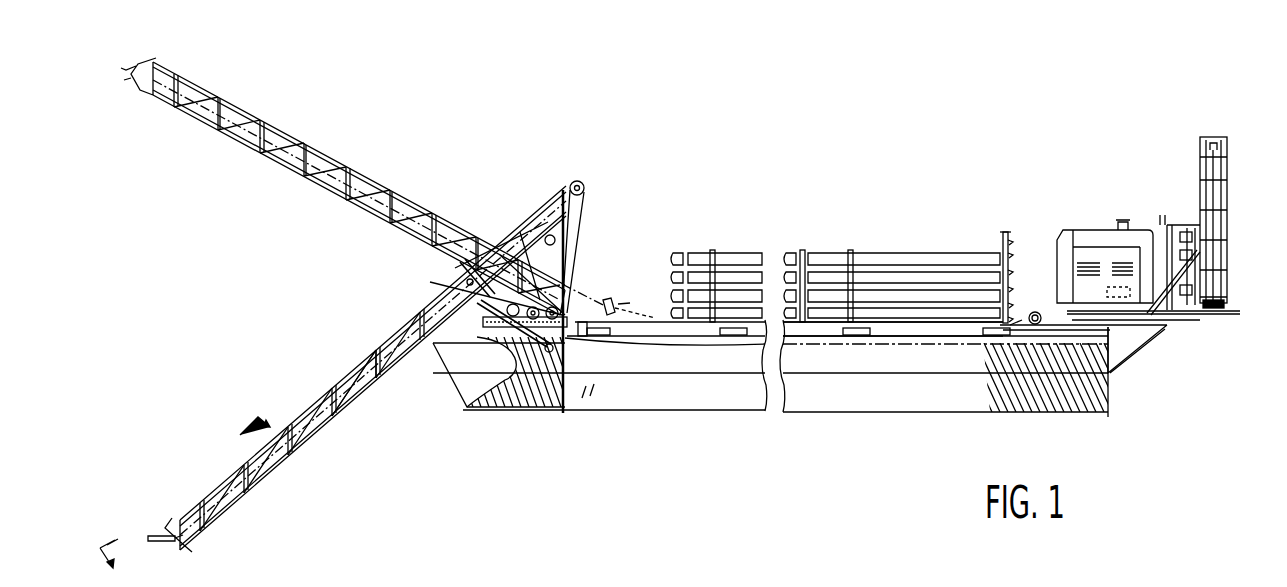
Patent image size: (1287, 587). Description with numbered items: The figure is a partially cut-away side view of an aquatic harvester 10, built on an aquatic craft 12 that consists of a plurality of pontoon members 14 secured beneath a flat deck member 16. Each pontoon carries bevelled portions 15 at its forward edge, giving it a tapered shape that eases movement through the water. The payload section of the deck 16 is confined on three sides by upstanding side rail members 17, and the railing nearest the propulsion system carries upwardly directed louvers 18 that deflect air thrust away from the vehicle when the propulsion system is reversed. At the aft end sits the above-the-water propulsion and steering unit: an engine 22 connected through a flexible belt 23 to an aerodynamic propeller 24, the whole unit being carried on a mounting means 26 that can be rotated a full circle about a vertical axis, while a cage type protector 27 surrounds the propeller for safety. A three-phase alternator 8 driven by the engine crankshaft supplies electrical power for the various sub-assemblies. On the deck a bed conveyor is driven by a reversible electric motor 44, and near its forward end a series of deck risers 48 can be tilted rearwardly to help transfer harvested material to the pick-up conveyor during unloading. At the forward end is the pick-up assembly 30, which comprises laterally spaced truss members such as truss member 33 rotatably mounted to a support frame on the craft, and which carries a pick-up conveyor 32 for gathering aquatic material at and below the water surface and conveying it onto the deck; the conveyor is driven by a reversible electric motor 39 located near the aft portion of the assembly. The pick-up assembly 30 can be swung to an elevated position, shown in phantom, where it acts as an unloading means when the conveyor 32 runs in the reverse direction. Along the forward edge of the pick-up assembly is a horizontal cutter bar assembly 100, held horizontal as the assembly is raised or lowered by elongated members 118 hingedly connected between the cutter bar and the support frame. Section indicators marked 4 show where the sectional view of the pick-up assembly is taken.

The section line 4- 4 is at (174, 484).
The three-phase alternator 8 is at (1107, 292).
The aquatic harvester 10 is at (940, 217).
The aquatic craft 12 is at (1142, 378).
The pontoon members 14 is at (862, 369).
The bevelled portions 15 is at (460, 390).
The flat deck member 16 is at (918, 336).
The upstanding side rail members 17 is at (882, 252).
The upwardly directed louvers 18 is at (1012, 250).
The engine 22 is at (1090, 232).
The flexible belt 23 is at (1183, 222).
The aerodynamic propeller 24 is at (1222, 195).
The mounting means 26 is at (1188, 328).
The cage type protector 27 is at (1226, 268).
The pick-up assembly 30 is at (348, 338).
The pick-up conveyor 32 is at (328, 385).
The truss member 33 is at (366, 410).
The electric motor 39 is at (541, 220).
The electric motor 44 is at (1036, 310).
The deck risers 48 is at (633, 312).
The horizontal cutter bar assembly 100 is at (178, 547).
The elongated members 118 is at (393, 383).